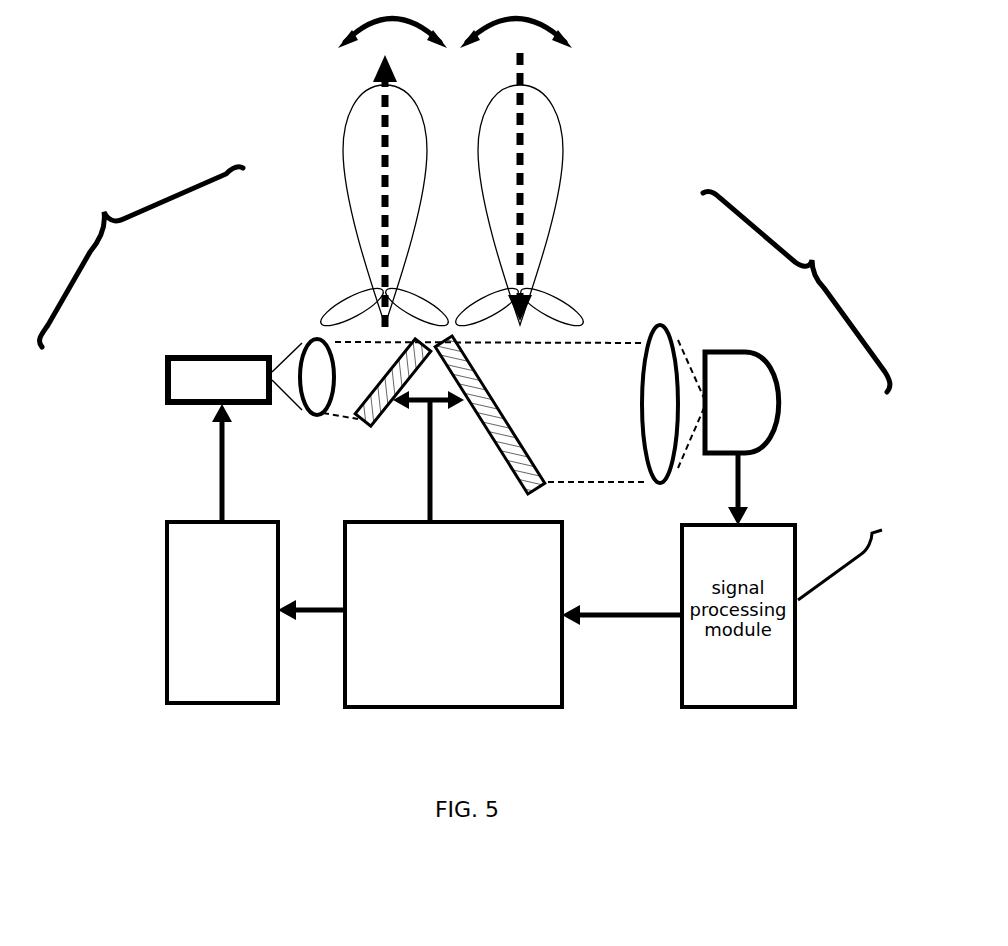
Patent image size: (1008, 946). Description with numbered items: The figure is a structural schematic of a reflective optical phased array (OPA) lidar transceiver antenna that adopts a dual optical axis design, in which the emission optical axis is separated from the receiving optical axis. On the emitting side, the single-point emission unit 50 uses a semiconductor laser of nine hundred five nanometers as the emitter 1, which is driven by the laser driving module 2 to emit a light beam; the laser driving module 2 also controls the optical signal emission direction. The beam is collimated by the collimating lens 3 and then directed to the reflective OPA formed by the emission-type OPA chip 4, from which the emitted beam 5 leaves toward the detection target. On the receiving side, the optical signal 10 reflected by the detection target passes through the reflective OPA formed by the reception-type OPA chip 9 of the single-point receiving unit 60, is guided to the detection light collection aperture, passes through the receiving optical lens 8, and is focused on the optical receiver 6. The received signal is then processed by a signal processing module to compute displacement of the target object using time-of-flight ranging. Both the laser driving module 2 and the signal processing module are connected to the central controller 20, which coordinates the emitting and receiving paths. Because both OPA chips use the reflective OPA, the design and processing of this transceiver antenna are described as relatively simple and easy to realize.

The emitter 1 is at (165, 376).
The laser driving module 2 is at (167, 600).
The collimating lens 3 is at (335, 340).
The emission-type OPA chip 4 is at (380, 371).
The emitted laser beam 5 is at (343, 208).
The optical receiver 6 is at (780, 400).
The receiving optical lens 8 is at (653, 337).
The reception-type OPA chip 9 is at (500, 405).
The received reflected beam 10 is at (562, 223).
The central controller 20 is at (450, 707).
The single-point emission unit 50 is at (141, 257).
The single-point receiving unit 60 is at (796, 292).